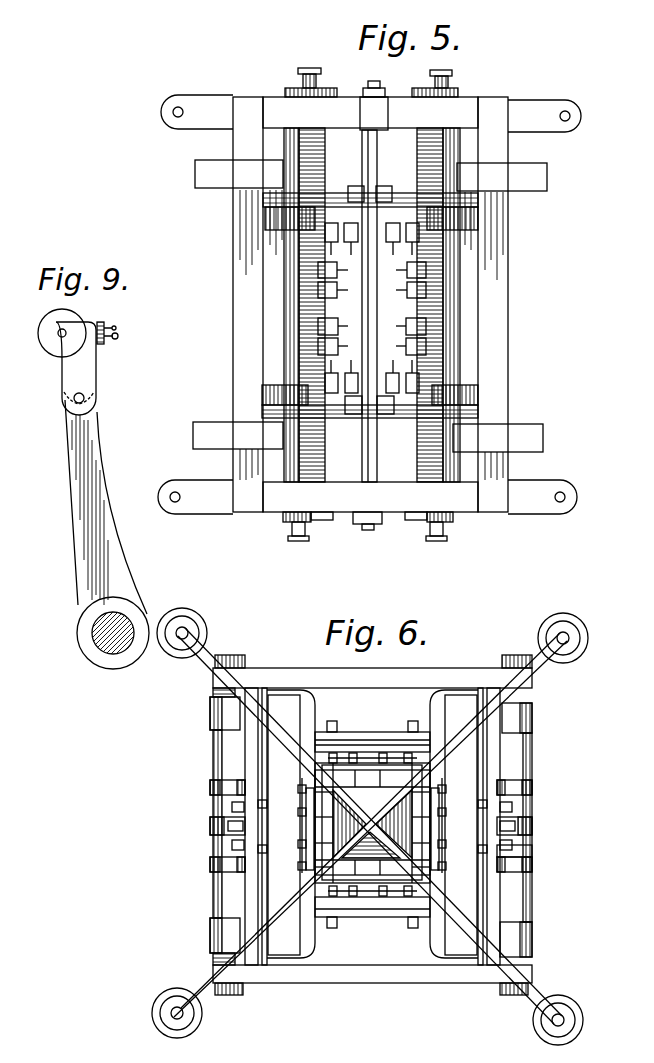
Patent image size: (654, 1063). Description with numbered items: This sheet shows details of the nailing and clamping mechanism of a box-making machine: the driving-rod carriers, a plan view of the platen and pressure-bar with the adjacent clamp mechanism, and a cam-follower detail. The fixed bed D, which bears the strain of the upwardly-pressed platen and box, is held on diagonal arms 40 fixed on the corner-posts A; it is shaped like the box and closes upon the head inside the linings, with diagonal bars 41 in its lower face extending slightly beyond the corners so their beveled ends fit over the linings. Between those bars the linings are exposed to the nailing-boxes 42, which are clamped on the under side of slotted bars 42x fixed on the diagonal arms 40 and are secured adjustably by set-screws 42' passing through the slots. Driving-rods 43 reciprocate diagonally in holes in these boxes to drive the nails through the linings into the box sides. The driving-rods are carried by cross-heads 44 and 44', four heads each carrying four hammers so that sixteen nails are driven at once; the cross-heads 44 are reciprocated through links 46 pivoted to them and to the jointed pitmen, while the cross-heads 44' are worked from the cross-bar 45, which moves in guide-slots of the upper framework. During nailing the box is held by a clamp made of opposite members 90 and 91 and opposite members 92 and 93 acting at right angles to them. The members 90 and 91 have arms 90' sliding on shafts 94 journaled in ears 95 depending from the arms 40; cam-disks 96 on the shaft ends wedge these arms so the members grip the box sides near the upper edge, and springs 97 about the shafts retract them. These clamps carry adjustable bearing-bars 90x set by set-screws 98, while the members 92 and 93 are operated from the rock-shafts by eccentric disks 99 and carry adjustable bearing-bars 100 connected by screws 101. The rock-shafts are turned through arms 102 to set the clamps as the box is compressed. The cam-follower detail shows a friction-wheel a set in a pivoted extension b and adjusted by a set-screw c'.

In FIG. 6, the diagonal arms 40 is at (495, 702).
In FIG. 6, the diagonal bars 41 is at (432, 778).
In FIG. 6, the nailing-boxes 42 is at (369, 825).
In FIG. 6, the bars 42x is at (302, 800).
In FIG. 6, the set-screws 42' is at (512, 851).
In FIG. 5, the driving-rods 43 is at (395, 330).
In FIG. 5, the cross-heads 44 is at (368, 305).
In FIG. 5, the cross-heads 44' is at (329, 302).
In FIG. 5, the cross-bar 45 is at (373, 185).
In FIG. 6, the links 46 is at (228, 985).
In FIG. 6, the clamp member 90 is at (372, 846).
In FIG. 6, the arms 90' is at (372, 879).
In FIG. 6, the adjustable bearing-bars 90x is at (390, 748).
In FIG. 6, the clamp member 91 is at (325, 705).
In FIG. 6, the clamp member 92 is at (248, 772).
In FIG. 6, the clamp member 93 is at (488, 890).
In FIG. 6, the shafts 94 is at (220, 850).
In FIG. 6, the ears 95 is at (222, 712).
In FIG. 6, the cam-disks 96 is at (238, 665).
In FIG. 6, the springs 97 is at (222, 688).
In FIG. 6, the set-screws 98 is at (332, 722).
In FIG. 6, the eccentric disks 99 is at (232, 800).
In FIG. 6, the adjustable bearing-bars 100 is at (305, 690).
In FIG. 6, the screws 101 is at (510, 808).
In FIG. 6, the arms 102 is at (232, 838).
In FIG. 6, the corner-posts A is at (200, 628).
In FIG. 6, the bed D is at (362, 792).
In FIG. 9, the friction-wheel a is at (50, 345).
In FIG. 9, the pivoted extension b is at (72, 370).
In FIG. 9, the set-screw c' is at (117, 350).